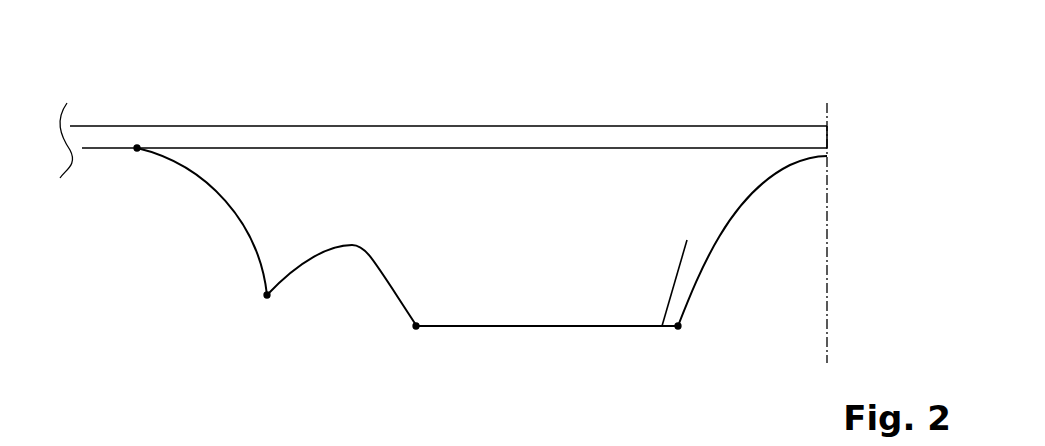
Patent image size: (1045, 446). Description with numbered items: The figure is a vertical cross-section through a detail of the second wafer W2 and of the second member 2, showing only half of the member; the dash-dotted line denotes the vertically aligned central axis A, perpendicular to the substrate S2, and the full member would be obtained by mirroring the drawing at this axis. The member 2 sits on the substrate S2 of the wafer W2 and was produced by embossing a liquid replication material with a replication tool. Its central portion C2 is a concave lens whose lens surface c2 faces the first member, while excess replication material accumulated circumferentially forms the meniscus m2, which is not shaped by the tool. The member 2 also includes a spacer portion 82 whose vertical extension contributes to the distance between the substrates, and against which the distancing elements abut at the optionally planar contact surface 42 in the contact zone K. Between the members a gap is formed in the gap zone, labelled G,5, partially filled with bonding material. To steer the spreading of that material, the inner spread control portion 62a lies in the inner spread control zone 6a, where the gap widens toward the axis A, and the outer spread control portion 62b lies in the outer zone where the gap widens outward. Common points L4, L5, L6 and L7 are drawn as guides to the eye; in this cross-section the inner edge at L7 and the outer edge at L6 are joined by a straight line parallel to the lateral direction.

The second member 2 is at (337, 173).
The central axis A is at (828, 103).
The contact zone K is at (548, 325).
The spacer portion 82 is at (597, 230).
The inner spread control zone 6a is at (687, 240).
The substrate S2 is at (730, 137).
The central portion C2 is at (763, 162).
The lens surface c2 is at (800, 163).
The inner spread control portion 62a is at (678, 326).
The outer spread control portion 62b is at (397, 295).
The contact surface 42 is at (560, 327).
The gap zone and gap G,5 is at (422, 327).
The meniscus m2 is at (217, 192).
The second wafer W2 is at (108, 236).
The common point L4 is at (134, 152).
The common point L5 is at (265, 299).
The outer edge L6 is at (413, 330).
The inner edge L7 is at (680, 330).